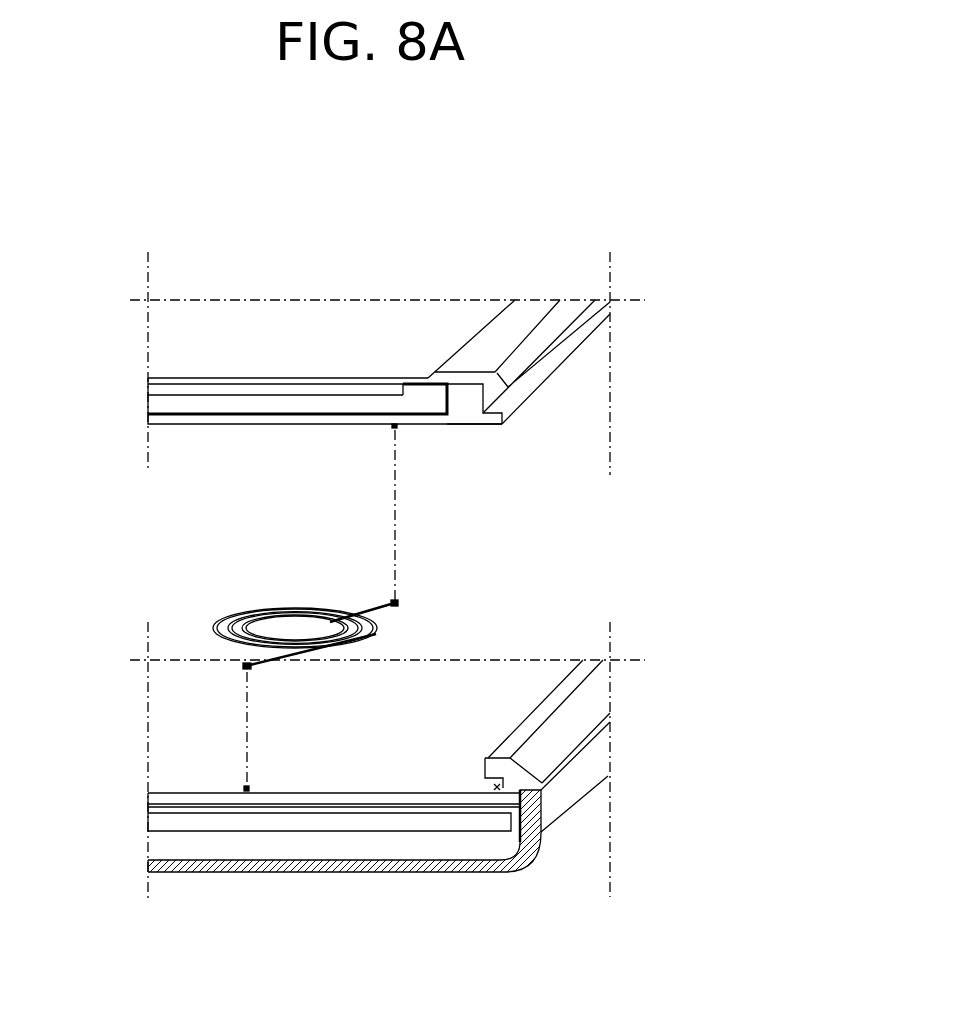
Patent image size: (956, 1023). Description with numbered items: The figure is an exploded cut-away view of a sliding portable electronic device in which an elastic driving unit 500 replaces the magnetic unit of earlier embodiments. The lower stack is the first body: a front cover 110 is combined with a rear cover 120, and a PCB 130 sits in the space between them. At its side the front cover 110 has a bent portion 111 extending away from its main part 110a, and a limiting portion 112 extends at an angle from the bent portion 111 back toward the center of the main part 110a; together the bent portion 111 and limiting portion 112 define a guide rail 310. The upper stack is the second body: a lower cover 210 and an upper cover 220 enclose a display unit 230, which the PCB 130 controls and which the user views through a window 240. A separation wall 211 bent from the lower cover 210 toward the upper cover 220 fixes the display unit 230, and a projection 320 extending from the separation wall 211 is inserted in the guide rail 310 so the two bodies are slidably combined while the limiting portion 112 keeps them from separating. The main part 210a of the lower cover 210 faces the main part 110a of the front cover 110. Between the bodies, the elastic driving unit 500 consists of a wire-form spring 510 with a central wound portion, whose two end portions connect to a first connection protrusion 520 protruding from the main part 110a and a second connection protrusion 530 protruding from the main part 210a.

The front cover 110 is at (155, 800).
The main part of the front cover 110a is at (173, 791).
The bent portion 111 is at (503, 781).
The limiting portion 112 is at (490, 768).
The rear cover 120 is at (152, 864).
The PCB 130 is at (155, 826).
The lower cover 210 is at (268, 418).
The main part of the lower cover 210a is at (315, 425).
The separation wall 211 is at (468, 415).
The upper cover 220 is at (485, 377).
The display unit 230 is at (167, 407).
The window 240 is at (210, 382).
The guide rail 310 is at (517, 790).
The projection 320 is at (490, 425).
The elastic driving unit 500 is at (297, 617).
The spring 510 is at (377, 635).
The first connection protrusion 520 is at (245, 788).
The second connection protrusion 530 is at (395, 428).